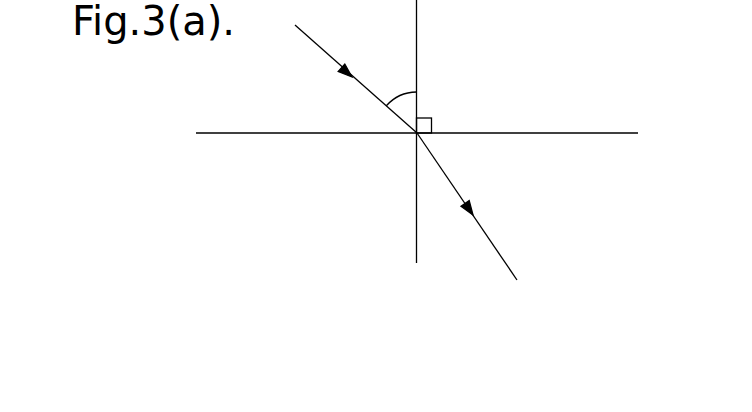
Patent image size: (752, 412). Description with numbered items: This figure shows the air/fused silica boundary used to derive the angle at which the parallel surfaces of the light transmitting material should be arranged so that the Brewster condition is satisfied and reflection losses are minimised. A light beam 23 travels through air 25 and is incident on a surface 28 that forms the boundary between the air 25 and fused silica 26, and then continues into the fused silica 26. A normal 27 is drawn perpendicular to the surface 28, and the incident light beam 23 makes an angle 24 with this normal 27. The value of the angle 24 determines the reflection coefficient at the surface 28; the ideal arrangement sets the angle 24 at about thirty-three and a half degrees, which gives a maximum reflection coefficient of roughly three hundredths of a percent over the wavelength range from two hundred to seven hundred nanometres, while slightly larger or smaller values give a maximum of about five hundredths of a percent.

The light beam 23 is at (318, 46).
The angle 24 is at (403, 92).
The air 25 is at (592, 26).
The fused silica 26 is at (594, 217).
The normal 27 is at (416, 28).
The surface 28 is at (616, 133).